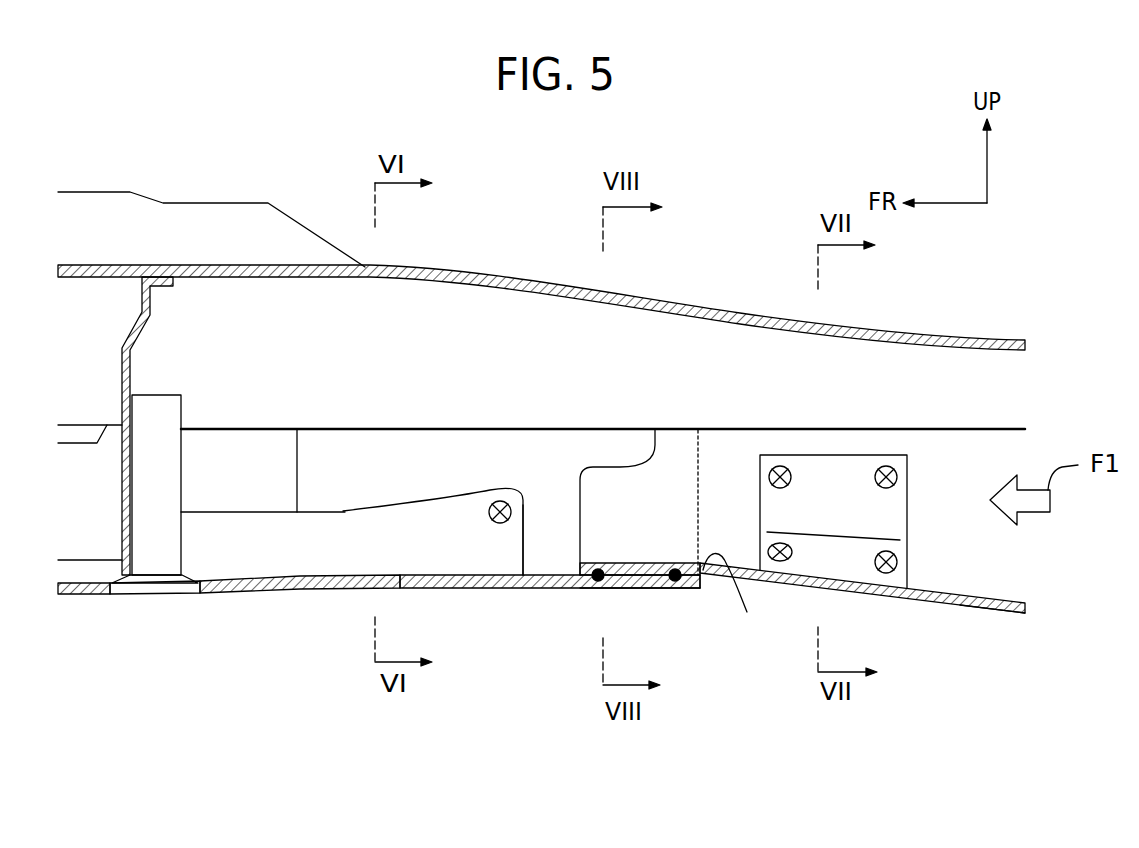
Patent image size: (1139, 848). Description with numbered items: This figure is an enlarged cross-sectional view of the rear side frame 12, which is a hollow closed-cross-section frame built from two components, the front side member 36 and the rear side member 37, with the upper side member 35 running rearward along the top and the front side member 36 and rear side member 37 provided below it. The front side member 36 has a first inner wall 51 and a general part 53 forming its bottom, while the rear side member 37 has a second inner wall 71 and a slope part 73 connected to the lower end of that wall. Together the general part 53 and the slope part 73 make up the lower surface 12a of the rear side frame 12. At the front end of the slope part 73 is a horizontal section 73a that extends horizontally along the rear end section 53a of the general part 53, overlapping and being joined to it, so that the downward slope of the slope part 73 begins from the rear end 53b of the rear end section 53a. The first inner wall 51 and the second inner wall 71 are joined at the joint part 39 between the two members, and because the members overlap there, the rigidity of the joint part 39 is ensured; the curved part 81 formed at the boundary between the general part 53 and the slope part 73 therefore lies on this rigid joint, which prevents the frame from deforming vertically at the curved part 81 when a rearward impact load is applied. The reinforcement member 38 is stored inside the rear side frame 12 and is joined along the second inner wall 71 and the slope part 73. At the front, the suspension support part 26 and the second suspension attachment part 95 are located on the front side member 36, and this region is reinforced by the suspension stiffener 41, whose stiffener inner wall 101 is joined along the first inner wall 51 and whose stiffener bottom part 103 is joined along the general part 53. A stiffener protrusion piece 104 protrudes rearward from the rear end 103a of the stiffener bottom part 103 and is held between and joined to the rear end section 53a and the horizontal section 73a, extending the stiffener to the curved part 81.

The rear side frame 12 is at (728, 290).
The lower surface 12a is at (525, 590).
The suspension support part 26 is at (146, 516).
The second suspension attachment part 95 is at (152, 588).
The upper side member 35 is at (503, 277).
The front side member 36 is at (270, 592).
The rear side member 37 is at (980, 608).
The reinforcement member 38 is at (803, 557).
The joint part 39 is at (623, 478).
The suspension stiffener 41 is at (478, 548).
The first inner wall 51 is at (502, 457).
The general part 53 is at (223, 594).
The rear end section 53a is at (645, 588).
The rear end 53b is at (702, 588).
The second inner wall 71 is at (717, 460).
The slope part 73 is at (927, 604).
The horizontal section 73a is at (642, 563).
The curved part 81 is at (733, 601).
The stiffener inner wall 101 is at (258, 533).
The stiffener bottom part 103 is at (408, 575).
The rear end 103a is at (510, 573).
The stiffener protrusion piece 104 is at (612, 584).